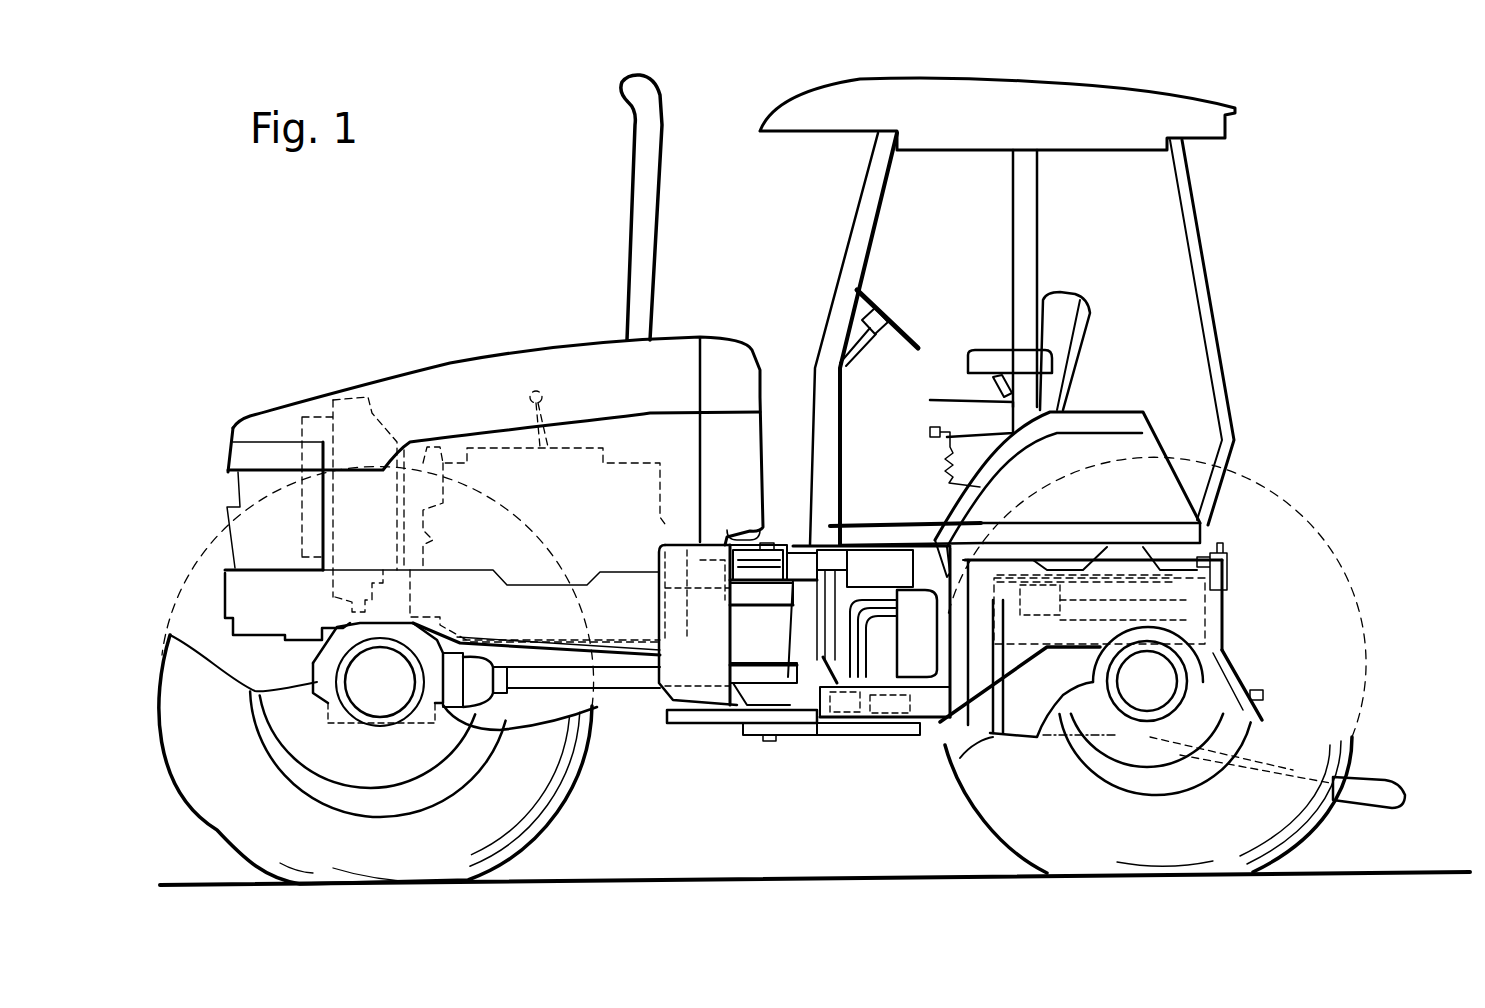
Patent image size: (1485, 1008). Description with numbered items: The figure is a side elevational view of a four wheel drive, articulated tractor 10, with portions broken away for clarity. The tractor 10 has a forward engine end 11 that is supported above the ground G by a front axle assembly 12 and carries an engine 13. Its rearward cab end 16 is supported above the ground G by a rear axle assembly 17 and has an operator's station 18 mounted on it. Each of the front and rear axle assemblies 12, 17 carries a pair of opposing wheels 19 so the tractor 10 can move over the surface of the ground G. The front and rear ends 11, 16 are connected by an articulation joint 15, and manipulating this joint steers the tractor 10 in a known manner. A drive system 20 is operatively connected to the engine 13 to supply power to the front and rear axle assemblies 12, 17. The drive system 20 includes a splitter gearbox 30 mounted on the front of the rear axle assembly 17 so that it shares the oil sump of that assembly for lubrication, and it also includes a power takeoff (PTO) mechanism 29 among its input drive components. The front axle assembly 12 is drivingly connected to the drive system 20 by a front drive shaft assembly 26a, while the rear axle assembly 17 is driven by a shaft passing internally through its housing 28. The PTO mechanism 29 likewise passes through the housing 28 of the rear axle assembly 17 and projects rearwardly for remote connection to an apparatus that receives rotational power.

The articulated tractor 10 is at (1316, 161).
The forward engine end 11 is at (425, 355).
The front axle assembly 12 is at (343, 700).
The engine 13 is at (585, 445).
The articulation joint 15 is at (767, 542).
The rearward cab end 16 is at (1212, 282).
The rear axle assembly 17 is at (1130, 713).
The operator's station 18 is at (1090, 320).
The wheels 19 is at (527, 827).
The drive system 20 is at (741, 758).
The front drive shaft assembly 26a is at (627, 683).
The housing of the rear axle assembly 28 is at (995, 723).
The power takeoff (PTO) mechanism 29 is at (1266, 694).
The splitter gearbox 30 is at (948, 730).
The ground G is at (1416, 873).